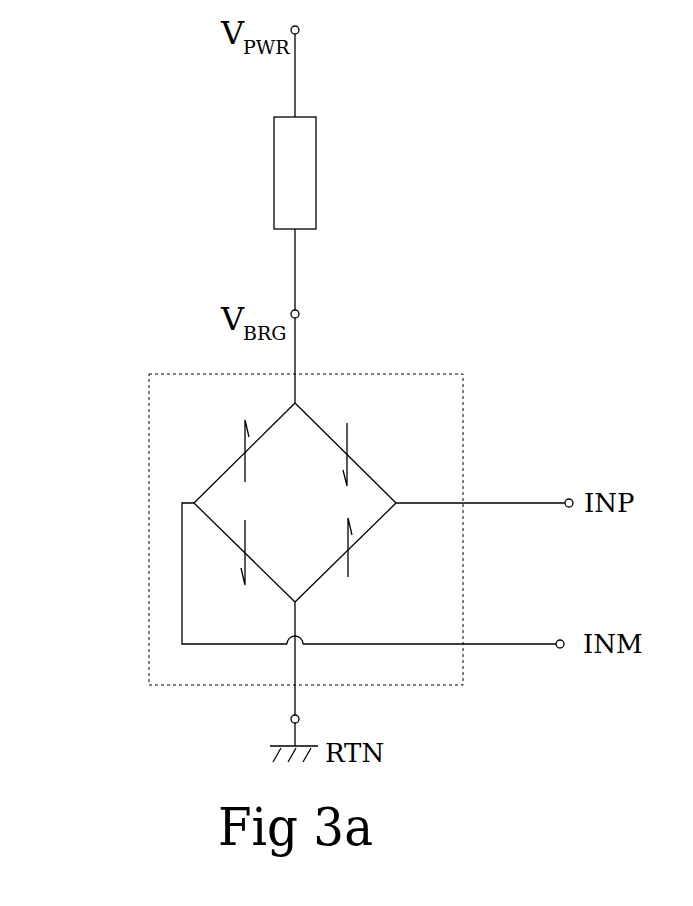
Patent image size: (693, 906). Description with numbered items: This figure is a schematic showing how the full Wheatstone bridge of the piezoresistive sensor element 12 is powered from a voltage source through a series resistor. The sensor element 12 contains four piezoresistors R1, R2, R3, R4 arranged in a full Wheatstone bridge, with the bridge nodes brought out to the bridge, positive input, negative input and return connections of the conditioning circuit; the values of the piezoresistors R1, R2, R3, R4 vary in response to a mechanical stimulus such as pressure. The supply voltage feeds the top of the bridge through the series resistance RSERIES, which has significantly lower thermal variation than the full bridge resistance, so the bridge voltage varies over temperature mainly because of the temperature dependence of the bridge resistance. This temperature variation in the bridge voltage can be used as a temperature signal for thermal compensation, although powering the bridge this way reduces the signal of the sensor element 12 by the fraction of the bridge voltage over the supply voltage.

The piezoresistive sensor element 12 is at (308, 513).
The series resistance RSERIES is at (352, 173).
The piezoresistor R1 is at (348, 453).
The piezoresistor R2 is at (348, 552).
The piezoresistor R3 is at (240, 453).
The piezoresistor R4 is at (244, 552).